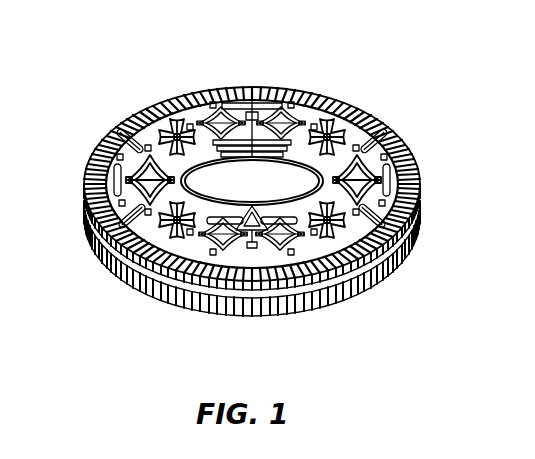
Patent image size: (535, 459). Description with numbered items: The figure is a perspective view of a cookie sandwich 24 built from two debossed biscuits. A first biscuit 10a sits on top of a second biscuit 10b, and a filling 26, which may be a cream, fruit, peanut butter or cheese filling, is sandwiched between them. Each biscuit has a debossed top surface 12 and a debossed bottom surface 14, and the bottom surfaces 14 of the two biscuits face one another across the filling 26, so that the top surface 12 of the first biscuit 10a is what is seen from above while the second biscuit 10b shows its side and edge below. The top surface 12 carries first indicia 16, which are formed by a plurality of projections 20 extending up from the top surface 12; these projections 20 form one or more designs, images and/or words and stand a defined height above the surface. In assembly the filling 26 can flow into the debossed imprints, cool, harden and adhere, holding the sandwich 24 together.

The sandwich 24 is at (244, 184).
The first biscuit 10a is at (266, 260).
The second biscuit 10b is at (354, 296).
The top surface 12 is at (92, 138).
The bottom surface 14 is at (132, 288).
The first indicia 16 is at (375, 138).
The projections 20 is at (382, 78).
The filling 26 is at (231, 313).